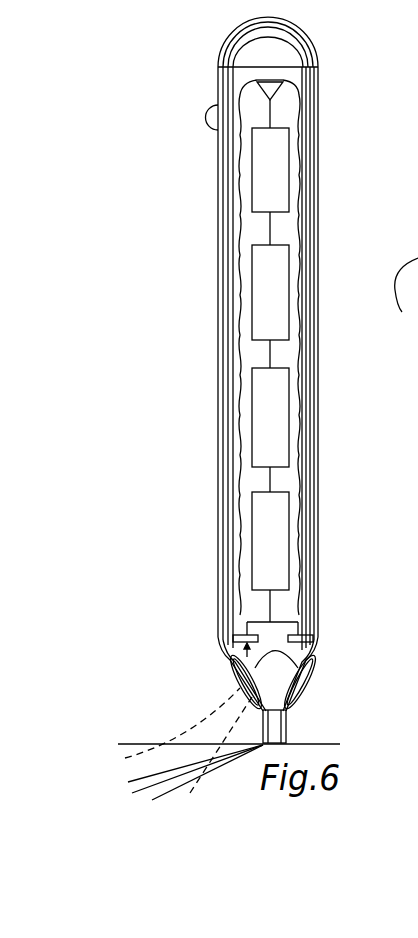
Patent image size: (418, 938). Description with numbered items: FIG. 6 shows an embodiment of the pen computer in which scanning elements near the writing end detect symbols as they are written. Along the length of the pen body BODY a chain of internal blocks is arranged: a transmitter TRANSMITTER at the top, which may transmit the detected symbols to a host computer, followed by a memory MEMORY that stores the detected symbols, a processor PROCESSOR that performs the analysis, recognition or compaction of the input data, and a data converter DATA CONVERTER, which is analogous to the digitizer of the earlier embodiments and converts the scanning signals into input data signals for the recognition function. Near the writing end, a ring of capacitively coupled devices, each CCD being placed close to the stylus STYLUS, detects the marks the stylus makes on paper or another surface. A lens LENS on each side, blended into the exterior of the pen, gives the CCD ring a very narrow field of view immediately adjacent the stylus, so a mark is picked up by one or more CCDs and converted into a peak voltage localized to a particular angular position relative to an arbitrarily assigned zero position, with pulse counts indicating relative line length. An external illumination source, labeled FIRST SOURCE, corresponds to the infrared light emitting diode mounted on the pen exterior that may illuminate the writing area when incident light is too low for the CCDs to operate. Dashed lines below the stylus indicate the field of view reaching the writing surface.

The transmitter TRANSMITTER is at (260, 185).
The memory MEMORY is at (268, 312).
The processor PROCESSOR is at (265, 432).
The data converter DATA CONVERTER is at (268, 545).
The CCD scanning element CCD is at (233, 627).
The lens system LENS is at (238, 683).
The stylus STYLUS is at (288, 722).
The first light source FIRST SOURCE is at (404, 309).
The pen body housing BODY is at (262, 364).